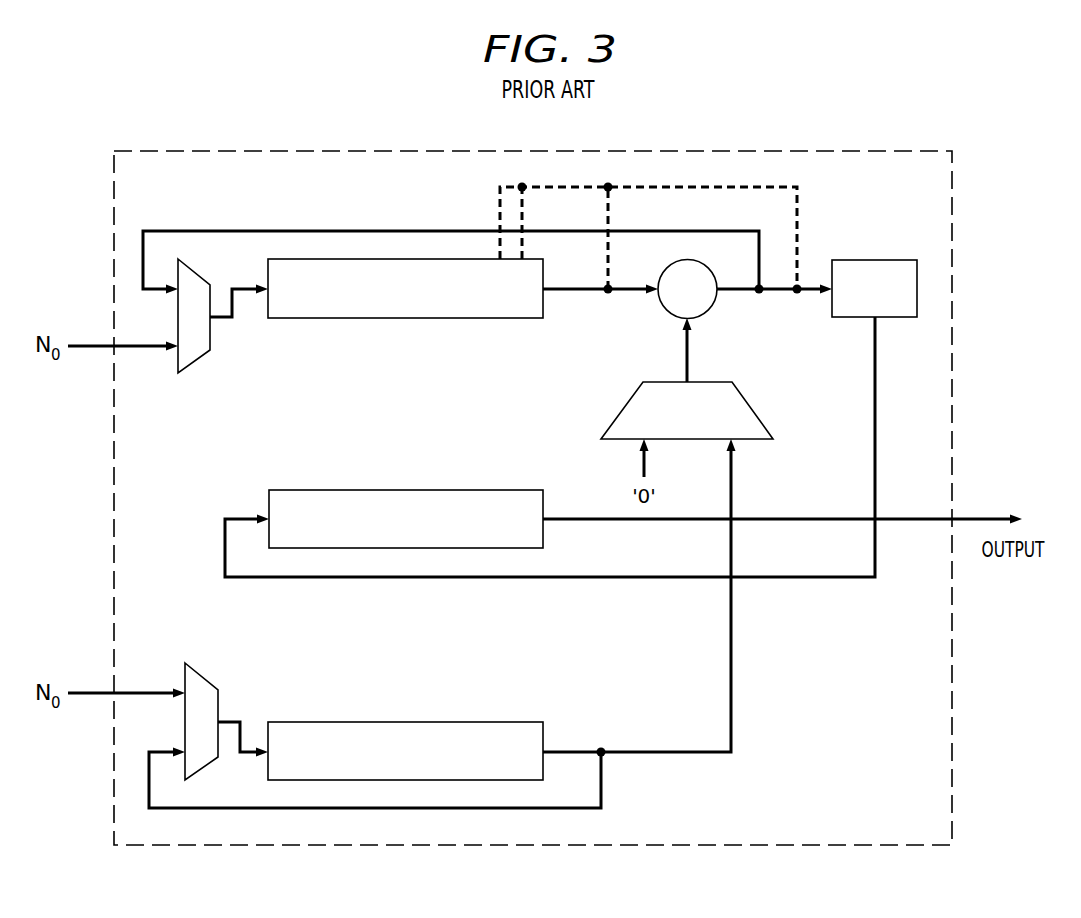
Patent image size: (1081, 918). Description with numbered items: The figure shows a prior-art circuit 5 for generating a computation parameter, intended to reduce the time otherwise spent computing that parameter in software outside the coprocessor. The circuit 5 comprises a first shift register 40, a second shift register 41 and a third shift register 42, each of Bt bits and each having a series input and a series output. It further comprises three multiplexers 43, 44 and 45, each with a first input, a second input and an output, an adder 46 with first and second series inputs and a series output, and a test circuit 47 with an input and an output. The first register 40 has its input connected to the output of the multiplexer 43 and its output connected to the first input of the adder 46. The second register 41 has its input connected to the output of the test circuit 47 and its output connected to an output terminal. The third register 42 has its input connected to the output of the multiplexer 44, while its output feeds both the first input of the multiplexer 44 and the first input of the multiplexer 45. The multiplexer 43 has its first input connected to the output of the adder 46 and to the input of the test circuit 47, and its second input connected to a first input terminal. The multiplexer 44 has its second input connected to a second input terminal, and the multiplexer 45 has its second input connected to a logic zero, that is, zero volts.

The prior art counting circuit 5 is at (514, 846).
The first register 40 is at (404, 318).
The second register 41 is at (410, 490).
The third register 42 is at (405, 722).
The first multiplexer 43 is at (197, 361).
The second multiplexer 44 is at (204, 678).
The multiplexer (selector) 45 is at (624, 409).
The adder 46 is at (711, 308).
The test unit 47 is at (875, 260).